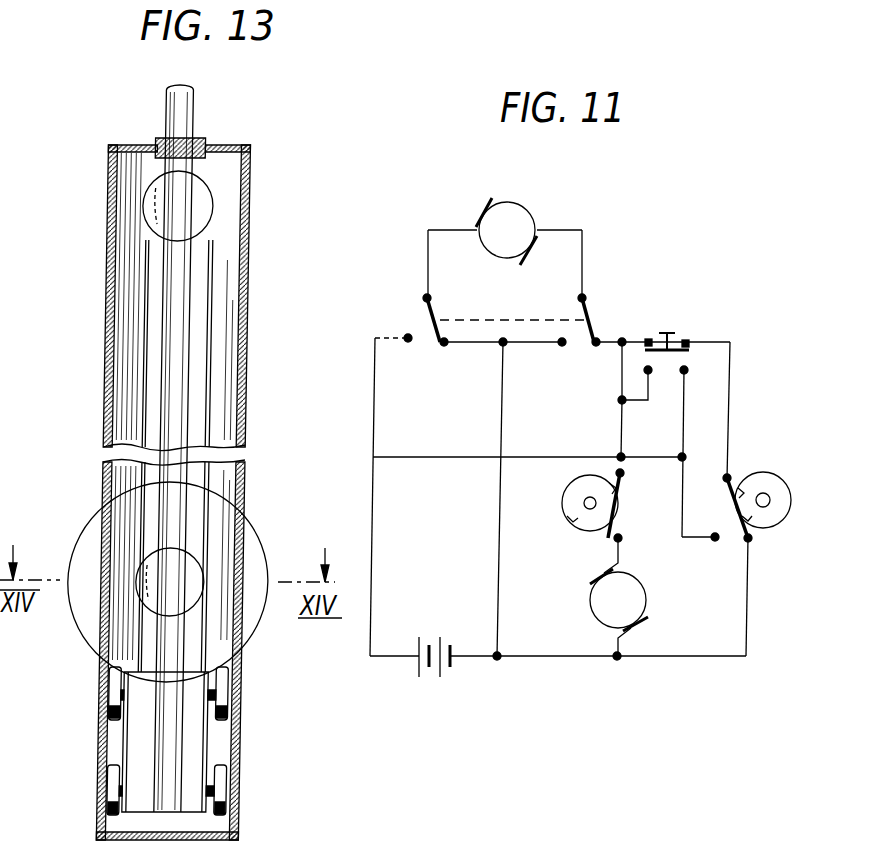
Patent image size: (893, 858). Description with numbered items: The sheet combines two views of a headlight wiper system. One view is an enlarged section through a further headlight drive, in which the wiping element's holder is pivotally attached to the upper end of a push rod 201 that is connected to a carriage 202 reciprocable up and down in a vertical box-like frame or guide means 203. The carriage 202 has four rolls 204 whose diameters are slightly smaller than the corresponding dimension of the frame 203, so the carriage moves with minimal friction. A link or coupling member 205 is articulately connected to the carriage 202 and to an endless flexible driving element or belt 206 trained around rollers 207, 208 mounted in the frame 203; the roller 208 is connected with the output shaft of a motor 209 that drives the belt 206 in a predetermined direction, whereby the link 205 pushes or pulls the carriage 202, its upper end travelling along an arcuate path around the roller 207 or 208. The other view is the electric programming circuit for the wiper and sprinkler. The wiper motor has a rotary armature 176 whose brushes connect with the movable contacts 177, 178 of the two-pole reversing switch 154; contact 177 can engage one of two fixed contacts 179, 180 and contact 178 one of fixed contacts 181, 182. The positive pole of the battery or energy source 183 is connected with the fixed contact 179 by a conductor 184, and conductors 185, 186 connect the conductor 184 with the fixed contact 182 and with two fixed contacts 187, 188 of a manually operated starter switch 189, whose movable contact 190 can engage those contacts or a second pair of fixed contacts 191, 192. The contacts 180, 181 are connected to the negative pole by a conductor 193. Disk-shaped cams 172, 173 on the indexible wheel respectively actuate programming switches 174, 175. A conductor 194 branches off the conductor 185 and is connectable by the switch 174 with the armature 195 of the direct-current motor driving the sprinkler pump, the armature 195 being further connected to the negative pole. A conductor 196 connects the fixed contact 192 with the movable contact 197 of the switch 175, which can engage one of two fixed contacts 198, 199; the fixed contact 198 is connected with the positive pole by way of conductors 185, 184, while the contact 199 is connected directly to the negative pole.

In FIG. 13, the push rod 201 is at (199, 109).
In FIG. 13, the carriage 202 is at (123, 744).
In FIG. 13, the frame 203 is at (251, 465).
In FIG. 13, the rolls 204 is at (106, 718).
In FIG. 13, the link 205 is at (100, 666).
In FIG. 13, the endless flexible driving element 206 is at (150, 448).
In FIG. 13, the roller 207 is at (146, 199).
In FIG. 13, the roller 208 is at (195, 578).
In FIG. 13, the motor 209 is at (97, 526).
In FIG. 11, the reversing switch 154 is at (472, 313).
In FIG. 11, the cam 172 is at (565, 508).
In FIG. 11, the cam 173 is at (768, 472).
In FIG. 11, the programming switch 174 is at (626, 509).
In FIG. 11, the programming switch 175 is at (806, 475).
In FIG. 11, the rotary armature 176 is at (518, 216).
In FIG. 11, the movable contact 177 is at (422, 299).
In FIG. 11, the movable contact 178 is at (578, 301).
In FIG. 11, the fixed contact 179 is at (408, 342).
In FIG. 11, the fixed contact 180 is at (446, 345).
In FIG. 11, the fixed contact 181 is at (560, 345).
In FIG. 11, the fixed contact 182 is at (601, 286).
In FIG. 11, the energy source 183 is at (445, 672).
In FIG. 11, the conductor 184 is at (373, 530).
In FIG. 11, the conductor 185 is at (426, 458).
In FIG. 11, the conductor 186 is at (621, 370).
In FIG. 11, the fixed contact 187 is at (651, 374).
In FIG. 11, the fixed contact 188 is at (687, 373).
In FIG. 11, the starter switch 189 is at (667, 330).
In FIG. 11, the movable contact 190 is at (683, 353).
In FIG. 11, the fixed contact 191 is at (647, 339).
In FIG. 11, the fixed contact 192 is at (695, 330).
In FIG. 11, the conductor 193 is at (497, 558).
In FIG. 11, the conductor 194 is at (619, 452).
In FIG. 11, the armature 195 is at (592, 605).
In FIG. 11, the conductor 196 is at (730, 410).
In FIG. 11, the movable contact 197 is at (736, 502).
In FIG. 11, the fixed contact 198 is at (703, 561).
In FIG. 11, the fixed contact 199 is at (752, 541).